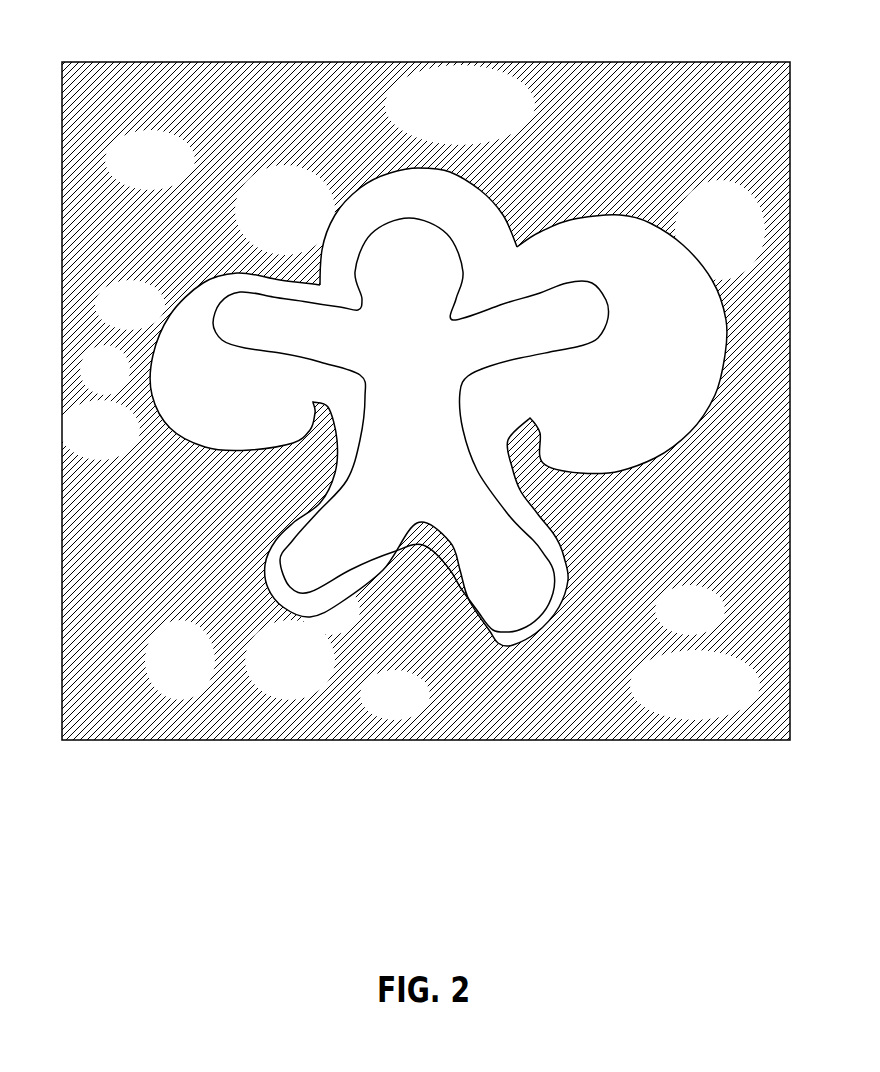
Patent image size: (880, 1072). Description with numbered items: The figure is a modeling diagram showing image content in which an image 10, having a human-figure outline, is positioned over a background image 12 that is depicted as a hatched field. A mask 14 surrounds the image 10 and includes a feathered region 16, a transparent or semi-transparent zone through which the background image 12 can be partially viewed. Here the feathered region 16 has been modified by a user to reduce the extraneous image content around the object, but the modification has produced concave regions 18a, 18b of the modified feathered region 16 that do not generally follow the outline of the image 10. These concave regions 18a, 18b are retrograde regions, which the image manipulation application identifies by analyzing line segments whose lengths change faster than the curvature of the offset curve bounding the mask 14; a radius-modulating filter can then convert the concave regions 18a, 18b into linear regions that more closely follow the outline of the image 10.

The image 10 is at (393, 240).
The background image 12 is at (242, 92).
The mask 14 is at (466, 180).
The feathered region 16 is at (583, 245).
The concave region 18a is at (317, 445).
The concave region 18b is at (532, 477).